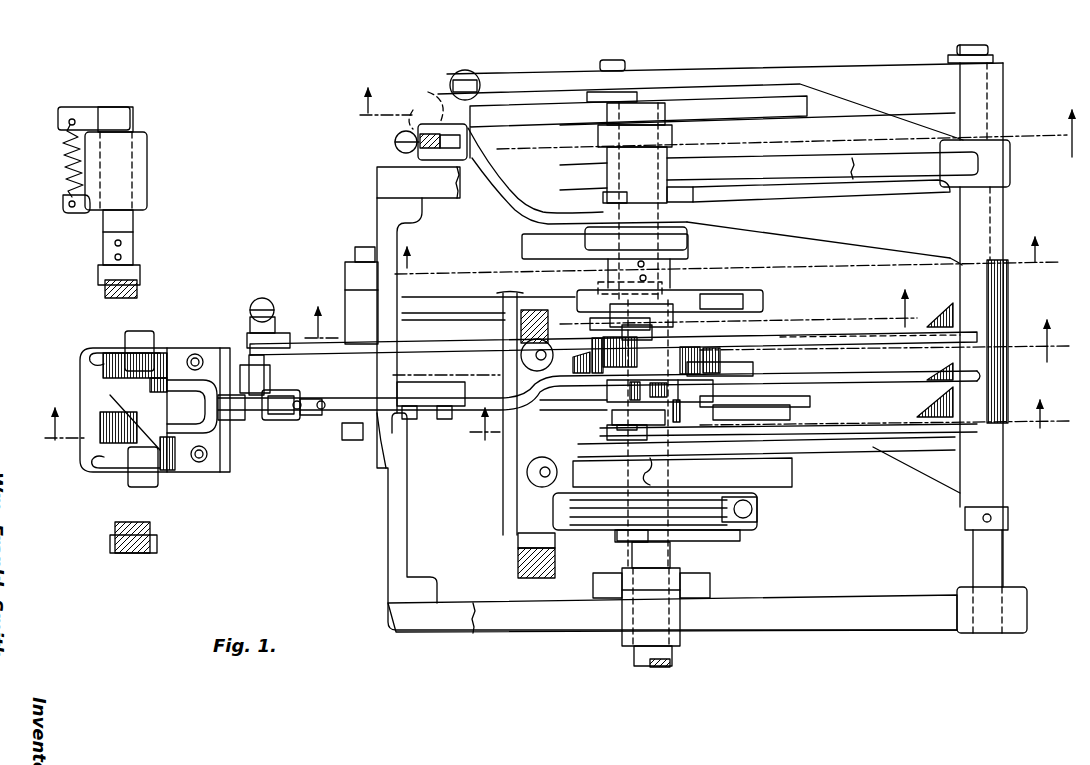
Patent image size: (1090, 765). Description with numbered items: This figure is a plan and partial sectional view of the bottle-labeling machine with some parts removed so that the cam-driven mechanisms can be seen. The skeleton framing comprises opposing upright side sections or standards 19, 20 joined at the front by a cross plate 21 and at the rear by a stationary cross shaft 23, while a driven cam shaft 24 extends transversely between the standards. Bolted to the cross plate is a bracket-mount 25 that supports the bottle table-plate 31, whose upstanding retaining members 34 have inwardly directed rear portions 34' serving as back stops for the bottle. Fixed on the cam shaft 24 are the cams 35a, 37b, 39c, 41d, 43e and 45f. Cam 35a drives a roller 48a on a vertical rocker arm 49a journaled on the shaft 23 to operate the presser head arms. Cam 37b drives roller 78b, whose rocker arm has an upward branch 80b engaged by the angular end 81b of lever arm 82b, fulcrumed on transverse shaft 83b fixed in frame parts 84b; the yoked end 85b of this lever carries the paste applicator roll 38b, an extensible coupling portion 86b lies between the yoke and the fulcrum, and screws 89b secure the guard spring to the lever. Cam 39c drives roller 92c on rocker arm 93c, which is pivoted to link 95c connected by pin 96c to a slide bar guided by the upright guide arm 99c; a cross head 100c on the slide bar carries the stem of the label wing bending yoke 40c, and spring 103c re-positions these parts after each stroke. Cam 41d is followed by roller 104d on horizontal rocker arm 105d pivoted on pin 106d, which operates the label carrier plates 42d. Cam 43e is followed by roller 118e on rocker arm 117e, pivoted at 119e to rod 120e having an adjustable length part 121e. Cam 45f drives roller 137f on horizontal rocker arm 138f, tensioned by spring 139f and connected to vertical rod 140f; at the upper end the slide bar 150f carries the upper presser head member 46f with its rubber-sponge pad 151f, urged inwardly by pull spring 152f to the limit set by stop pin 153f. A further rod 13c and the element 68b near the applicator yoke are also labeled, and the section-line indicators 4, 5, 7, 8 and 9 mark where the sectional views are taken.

The rod 13c is at (350, 345).
The upright side section 19 is at (793, 617).
The upright side section 20 is at (388, 178).
The cross plate 21 is at (388, 532).
The stationary cross shaft 23 is at (993, 570).
The driven shaft 24 is at (666, 660).
The bracket-mount 25 is at (372, 455).
The bottle supporting table-plate 31 is at (88, 370).
The bottle retaining members 34 is at (96, 425).
The rear portions of retaining members 34' is at (134, 411).
The cam 35a is at (792, 475).
The cam 37b is at (775, 415).
The paste applicator roll 38b is at (268, 422).
The cam 39c is at (745, 355).
The label wing bending yoke 40c is at (195, 433).
The cam 41d is at (763, 296).
The label carrier plates 42d is at (140, 336).
The cam 43e is at (522, 238).
The cam 45f is at (512, 108).
The upper presser head member 46f is at (108, 245).
The roller 48a is at (676, 471).
The vertical rocker arm 49a is at (785, 388).
The nut 68b is at (312, 416).
The roller 78b is at (583, 415).
The upwardly extending branch 80b is at (777, 434).
The angular end 81b is at (790, 403).
The lever arm 82b is at (598, 388).
The transverse shaft 83b is at (520, 507).
The frame parts 84b is at (522, 560).
The yoked forward end 85b is at (290, 420).
The extensible coupling portion 86b is at (445, 408).
The screws 89b is at (321, 401).
The roller 92c is at (590, 318).
The vertical rocker arm 93c is at (857, 332).
The link member 95c is at (283, 333).
The pin 96c is at (264, 300).
The upright guide arm 99c is at (350, 442).
The cross head 100c is at (240, 377).
The spring 103c is at (252, 318).
The roller 104d is at (610, 300).
The horizontal rocker arm 105d is at (450, 297).
The pin 106d is at (365, 247).
The rocker arm 117e is at (790, 225).
The roller 118e is at (577, 189).
The pivot 119e is at (416, 97).
The rod 120e is at (398, 110).
The adjustable part 121e is at (395, 141).
The roller 137f is at (595, 92).
The horizontal rocker arm 138f is at (730, 70).
The spring 139f is at (480, 58).
The vertical rod 140f is at (143, 180).
The slide bar 150f is at (127, 223).
The pad-body medium 151f is at (103, 290).
The pull spring 152f is at (63, 160).
The stop pin 153f is at (88, 117).
The section line 4 is at (758, 439).
The section line 5 is at (557, 402).
The section line 7 is at (611, 303).
The section line 8 is at (727, 242).
The section line 9 is at (719, 107).